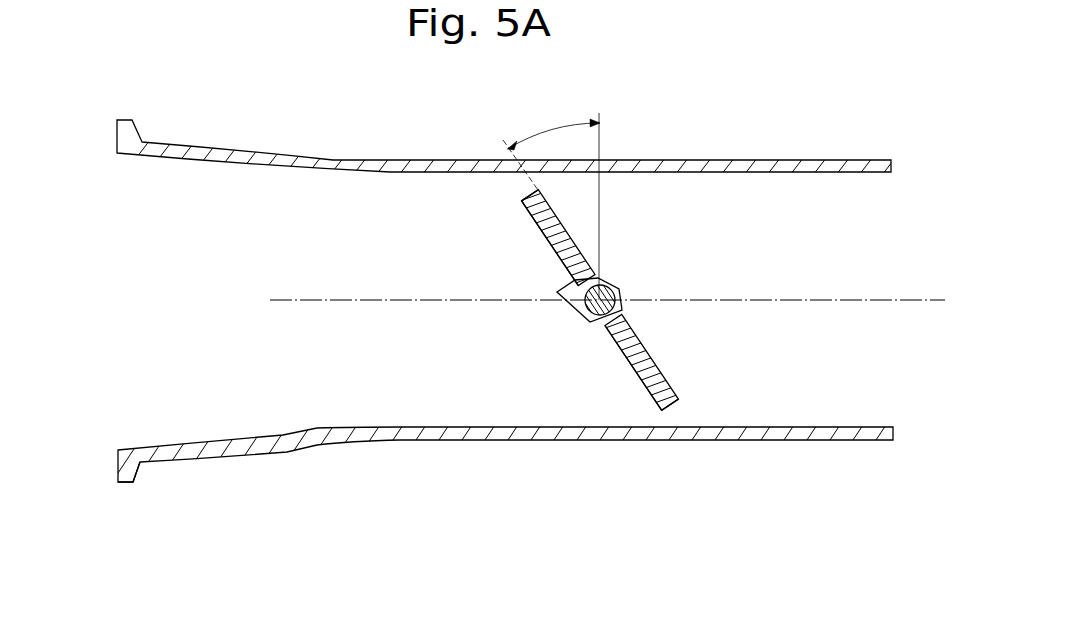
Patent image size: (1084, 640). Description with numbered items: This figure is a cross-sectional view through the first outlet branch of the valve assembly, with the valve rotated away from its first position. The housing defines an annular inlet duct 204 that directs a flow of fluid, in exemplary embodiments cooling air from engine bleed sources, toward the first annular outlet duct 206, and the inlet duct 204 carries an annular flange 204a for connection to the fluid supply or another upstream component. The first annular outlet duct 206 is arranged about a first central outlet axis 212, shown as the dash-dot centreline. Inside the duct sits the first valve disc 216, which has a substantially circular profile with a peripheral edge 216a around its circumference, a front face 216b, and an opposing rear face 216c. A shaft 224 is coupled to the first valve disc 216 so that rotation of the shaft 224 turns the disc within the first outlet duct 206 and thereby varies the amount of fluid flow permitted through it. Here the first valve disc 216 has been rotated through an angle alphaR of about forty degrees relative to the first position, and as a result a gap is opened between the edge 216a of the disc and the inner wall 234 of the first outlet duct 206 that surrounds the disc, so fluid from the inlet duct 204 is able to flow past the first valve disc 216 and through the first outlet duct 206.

The annular inlet duct 204 is at (157, 255).
The annular flange 204a is at (131, 474).
The first annular outlet duct 206 is at (735, 168).
The first central outlet axis 212 is at (926, 299).
The first valve disc 216 is at (559, 247).
The peripheral edge 216a is at (528, 201).
The front face 216b is at (524, 211).
The rear face 216c is at (633, 365).
The shaft 224 is at (608, 288).
The inner wall 234 is at (380, 175).
The rotation angle alphaR is at (551, 198).